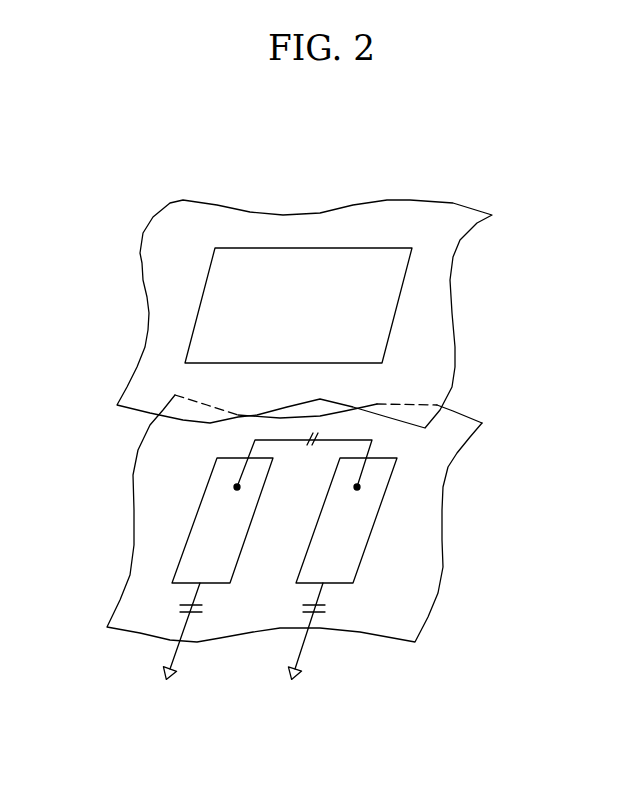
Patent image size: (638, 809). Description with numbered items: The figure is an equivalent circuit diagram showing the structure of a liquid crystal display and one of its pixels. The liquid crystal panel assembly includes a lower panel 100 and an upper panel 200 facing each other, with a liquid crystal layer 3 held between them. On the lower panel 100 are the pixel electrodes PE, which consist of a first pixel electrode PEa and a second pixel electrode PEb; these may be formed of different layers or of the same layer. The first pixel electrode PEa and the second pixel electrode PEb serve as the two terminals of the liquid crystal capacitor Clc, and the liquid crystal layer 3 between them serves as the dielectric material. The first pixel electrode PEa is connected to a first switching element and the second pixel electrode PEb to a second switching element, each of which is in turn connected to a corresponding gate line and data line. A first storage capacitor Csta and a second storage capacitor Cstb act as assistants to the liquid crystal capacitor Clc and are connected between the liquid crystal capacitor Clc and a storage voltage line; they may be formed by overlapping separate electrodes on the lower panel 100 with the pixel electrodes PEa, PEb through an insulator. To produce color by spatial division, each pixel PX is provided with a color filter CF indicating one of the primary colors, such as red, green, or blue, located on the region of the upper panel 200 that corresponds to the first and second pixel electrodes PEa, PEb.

The liquid crystal layer 3 is at (295, 483).
The upper panel 200 is at (329, 314).
The color filter CF is at (405, 280).
The lower panel 100 is at (331, 581).
The pixel PX is at (346, 600).
The pixel electrode PE is at (363, 520).
The first pixel electrode PEa is at (255, 518).
The second pixel electrode PEb is at (363, 555).
The liquid crystal capacitor Clc is at (304, 460).
The first storage capacitor Csta is at (169, 631).
The second storage capacitor Cstb is at (328, 631).